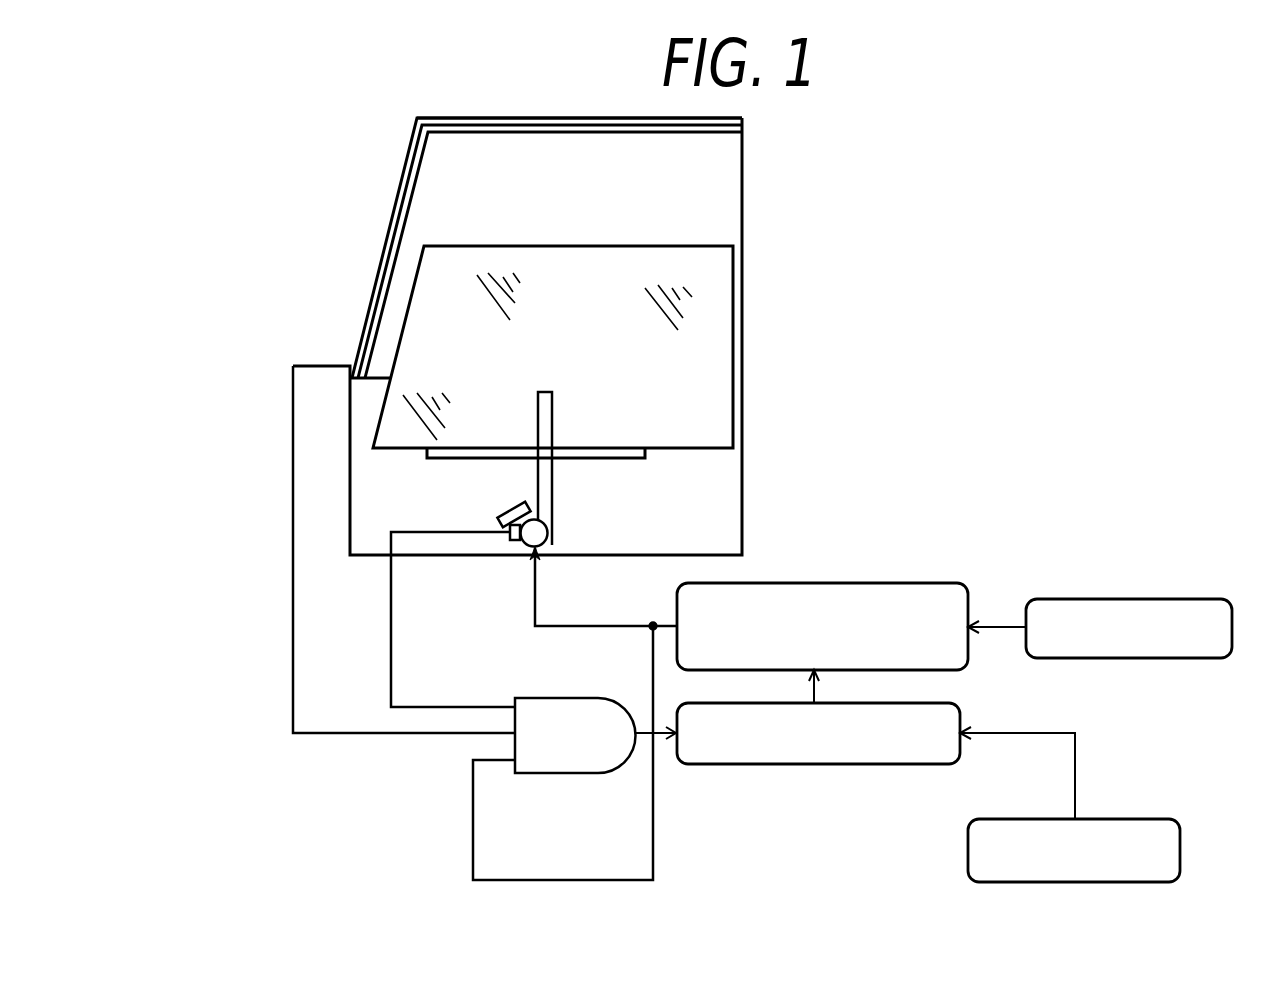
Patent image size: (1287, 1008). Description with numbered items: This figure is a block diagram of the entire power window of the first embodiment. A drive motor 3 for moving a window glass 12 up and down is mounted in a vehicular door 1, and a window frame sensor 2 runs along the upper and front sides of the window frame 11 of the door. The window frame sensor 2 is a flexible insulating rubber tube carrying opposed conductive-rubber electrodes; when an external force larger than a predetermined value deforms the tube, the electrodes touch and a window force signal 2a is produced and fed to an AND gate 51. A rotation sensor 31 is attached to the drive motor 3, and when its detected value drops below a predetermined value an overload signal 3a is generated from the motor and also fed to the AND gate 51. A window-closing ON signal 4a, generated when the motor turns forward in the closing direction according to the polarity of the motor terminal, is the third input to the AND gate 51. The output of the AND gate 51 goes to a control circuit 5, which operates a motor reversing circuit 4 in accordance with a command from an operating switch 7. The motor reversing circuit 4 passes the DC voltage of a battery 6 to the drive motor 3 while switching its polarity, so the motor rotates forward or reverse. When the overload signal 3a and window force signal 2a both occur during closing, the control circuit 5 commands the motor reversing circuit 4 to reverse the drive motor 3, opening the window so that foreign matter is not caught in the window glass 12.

The vehicular door 1 is at (742, 503).
The window frame sensor 2 is at (397, 218).
The window force signal 2a is at (292, 597).
The drive motor 3 is at (543, 547).
The overload signal 3a is at (391, 597).
The rotation sensor 31 is at (518, 545).
The motor reversing circuit 4 is at (933, 589).
The window-closing ON signal 4a is at (654, 816).
The control circuit 5 is at (920, 764).
The AND gate 51 is at (580, 698).
The battery 6 is at (1193, 599).
The operating switch 7 is at (1150, 819).
The window frame 11 is at (742, 120).
The window glass 12 is at (727, 329).